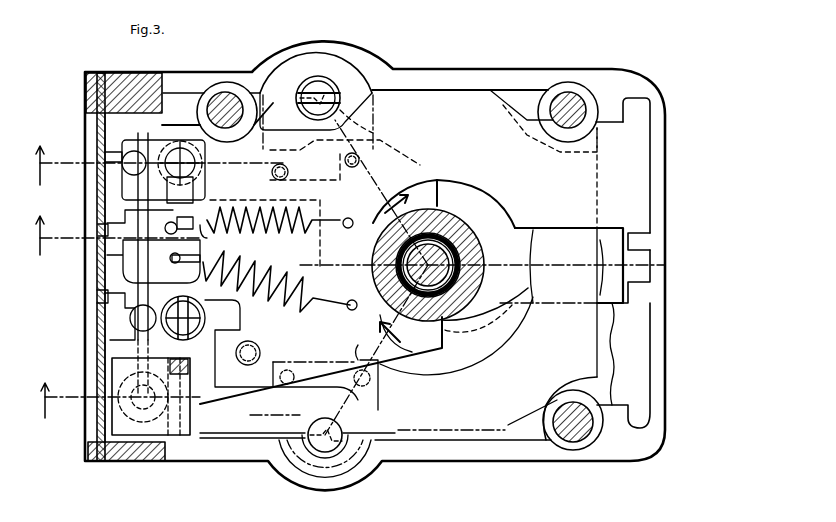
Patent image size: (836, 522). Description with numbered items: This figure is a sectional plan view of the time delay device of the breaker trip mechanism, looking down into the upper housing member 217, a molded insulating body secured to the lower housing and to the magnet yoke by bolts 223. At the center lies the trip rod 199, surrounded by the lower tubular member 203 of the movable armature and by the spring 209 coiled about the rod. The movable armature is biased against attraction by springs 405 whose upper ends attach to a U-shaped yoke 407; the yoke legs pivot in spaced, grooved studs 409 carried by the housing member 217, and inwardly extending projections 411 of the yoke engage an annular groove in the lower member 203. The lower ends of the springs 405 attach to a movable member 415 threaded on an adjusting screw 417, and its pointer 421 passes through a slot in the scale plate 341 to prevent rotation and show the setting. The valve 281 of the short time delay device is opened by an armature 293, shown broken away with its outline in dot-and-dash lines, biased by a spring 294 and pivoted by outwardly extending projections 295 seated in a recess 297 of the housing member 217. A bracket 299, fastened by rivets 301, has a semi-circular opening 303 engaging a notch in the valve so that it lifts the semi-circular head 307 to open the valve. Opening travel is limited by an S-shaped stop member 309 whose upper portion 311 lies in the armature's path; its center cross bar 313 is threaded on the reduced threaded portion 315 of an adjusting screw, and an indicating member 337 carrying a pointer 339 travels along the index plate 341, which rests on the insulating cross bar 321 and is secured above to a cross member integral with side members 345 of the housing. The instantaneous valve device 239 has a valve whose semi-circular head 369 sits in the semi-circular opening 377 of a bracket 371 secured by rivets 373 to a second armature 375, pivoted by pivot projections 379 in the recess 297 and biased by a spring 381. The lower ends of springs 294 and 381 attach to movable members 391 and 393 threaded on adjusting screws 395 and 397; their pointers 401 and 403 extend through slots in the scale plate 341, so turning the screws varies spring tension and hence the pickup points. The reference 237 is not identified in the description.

The trip rod 199 is at (472, 248).
The lower tubular member 203 is at (455, 272).
The spring 209 is at (452, 252).
The upper housing member 217 is at (622, 452).
The bolts 223 is at (228, 100).
The lower end 237 is at (320, 517).
The instantaneous valve device 239 is at (366, 36).
The valve 281 is at (348, 430).
The armature 293 is at (630, 352).
The spring 294 is at (205, 316).
The projections 295 is at (640, 288).
The recess 297 is at (640, 254).
The bracket 299 is at (380, 405).
The rivets 301 is at (294, 305).
The semi-circular opening 303 is at (310, 426).
The semi-circular head 307 is at (340, 453).
The S-shaped stop member 309 is at (130, 420).
The upper portion 311 is at (160, 432).
The center cross bar 313 is at (185, 412).
The reduced threaded portion 315 is at (104, 462).
The cross bar 321 is at (92, 270).
The indicating member 337 is at (190, 380).
The pointer 339 is at (100, 405).
The index plate 341 is at (100, 330).
The side members 345 is at (130, 74).
The semi-circular head 369 is at (326, 86).
The bracket 371 is at (290, 90).
The rivets 373 is at (373, 146).
The armature 375 is at (447, 108).
The semi-circular opening 377 is at (306, 112).
The pivot projections 379 is at (640, 114).
The spring 381 is at (156, 140).
The movable member 391 is at (128, 334).
The movable member 393 is at (128, 175).
The adjusting screw 395 is at (130, 318).
The adjusting screw 397 is at (112, 168).
The pointer 401 is at (96, 296).
The pointer 403 is at (93, 142).
The springs 405 is at (318, 256).
The U-shaped yoke 407 is at (392, 365).
The grooved studs 409 is at (268, 180).
The projections 411 is at (445, 212).
The movable member 415 is at (122, 258).
The adjusting screw 417 is at (128, 240).
The pointer 421 is at (96, 226).